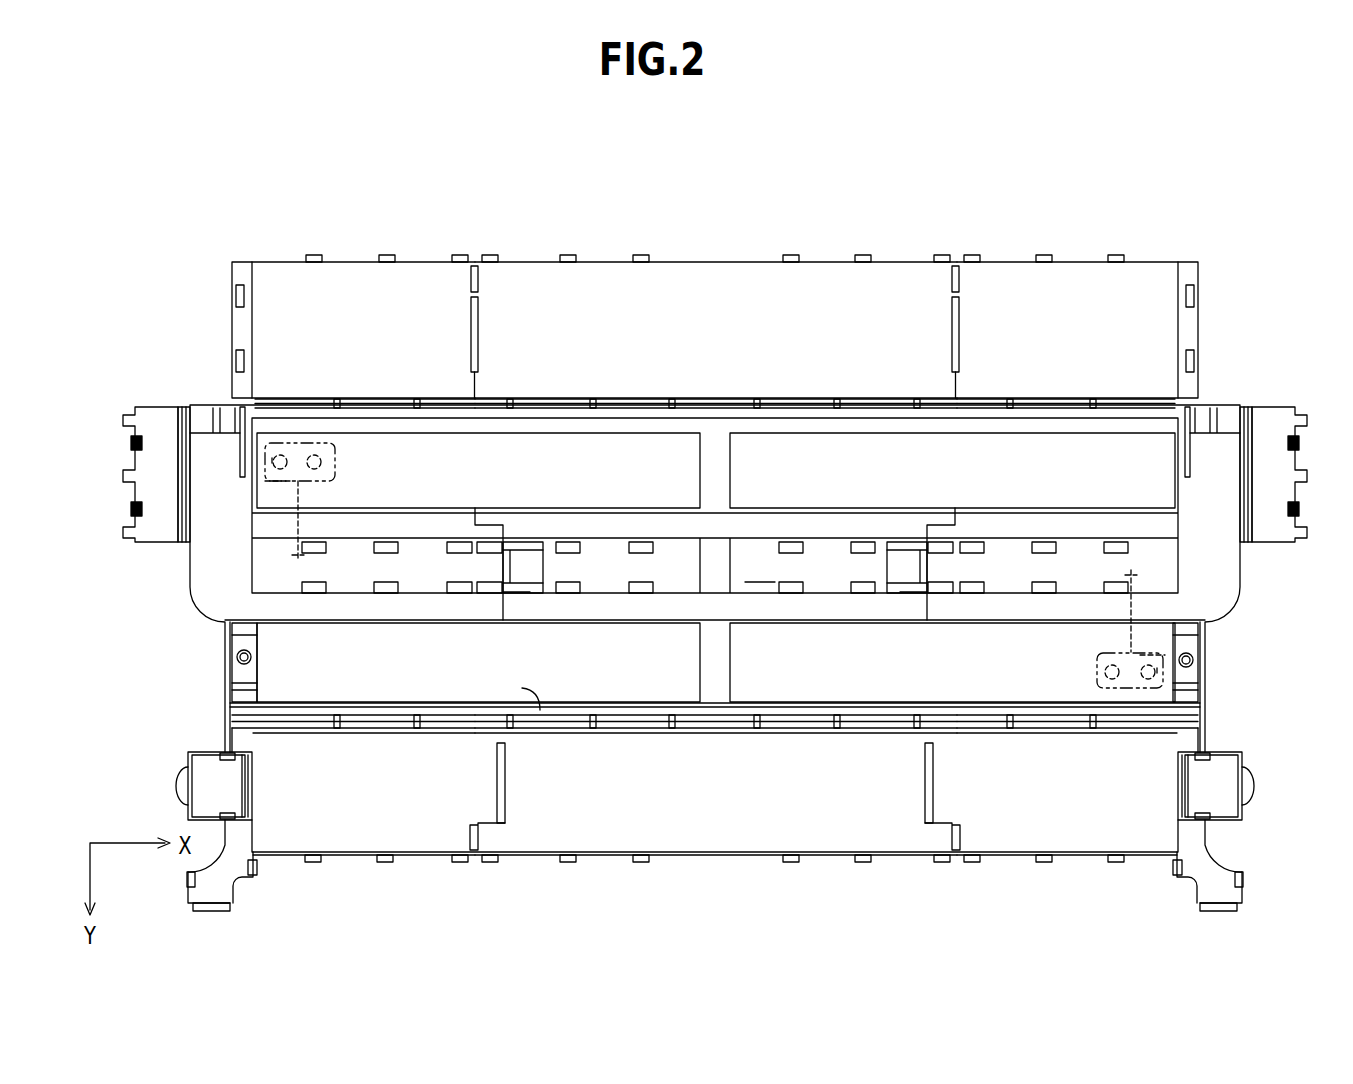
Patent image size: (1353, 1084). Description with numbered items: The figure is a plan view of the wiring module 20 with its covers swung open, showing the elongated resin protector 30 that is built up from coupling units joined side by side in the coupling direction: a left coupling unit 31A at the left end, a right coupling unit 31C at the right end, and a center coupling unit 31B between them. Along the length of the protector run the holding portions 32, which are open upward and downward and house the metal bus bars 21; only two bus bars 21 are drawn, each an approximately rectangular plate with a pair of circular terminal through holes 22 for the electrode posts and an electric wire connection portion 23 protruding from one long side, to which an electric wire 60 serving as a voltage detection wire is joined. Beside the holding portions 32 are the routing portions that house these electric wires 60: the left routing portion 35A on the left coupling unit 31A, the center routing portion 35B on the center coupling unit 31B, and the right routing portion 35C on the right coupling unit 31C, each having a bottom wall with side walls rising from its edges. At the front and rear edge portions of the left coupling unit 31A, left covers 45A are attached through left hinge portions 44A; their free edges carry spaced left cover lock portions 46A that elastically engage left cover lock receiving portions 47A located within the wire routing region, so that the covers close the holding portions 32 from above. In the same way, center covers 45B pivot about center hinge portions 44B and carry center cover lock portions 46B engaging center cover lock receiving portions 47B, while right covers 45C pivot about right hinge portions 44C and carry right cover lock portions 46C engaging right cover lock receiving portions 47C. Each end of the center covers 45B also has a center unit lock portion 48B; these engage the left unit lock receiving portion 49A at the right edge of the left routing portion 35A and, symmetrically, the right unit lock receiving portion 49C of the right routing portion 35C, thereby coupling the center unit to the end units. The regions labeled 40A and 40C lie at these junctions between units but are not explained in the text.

The wiring module 20 is at (145, 413).
The bus bar 21 is at (282, 485).
The terminal through hole 22 is at (257, 463).
The electric wire connection portion 23 is at (287, 493).
The resin protector 30 is at (170, 405).
The left coupling unit 31A is at (210, 887).
The center coupling unit 31B is at (561, 815).
The right coupling unit 31C is at (1242, 890).
The holding portion 32 is at (268, 447).
The left routing portion 35A is at (353, 585).
The center routing portion 35B is at (753, 582).
The right routing portion 35C is at (1153, 545).
The coupling member 40A is at (520, 565).
The coupling member 40C is at (910, 565).
The left hinge portion 44A is at (285, 398).
The center hinge portion 44B is at (668, 398).
The right hinge portion 44C is at (1143, 400).
The left cover 45A is at (357, 305).
The center cover 45B is at (728, 280).
The right cover 45C is at (1072, 307).
The left cover lock portion 46A is at (314, 254).
The center cover lock portion 46B is at (568, 254).
The right cover lock portion 46C is at (972, 254).
The left cover lock receiving portion 47A is at (458, 548).
The center cover lock receiving portion 47B is at (641, 548).
The right cover lock receiving portion 47C is at (973, 548).
The center unit lock portion 48B is at (492, 254).
The left unit lock receiving portion 49A is at (492, 548).
The right unit lock receiving portion 49C is at (938, 548).
The electric wire 60 is at (300, 553).